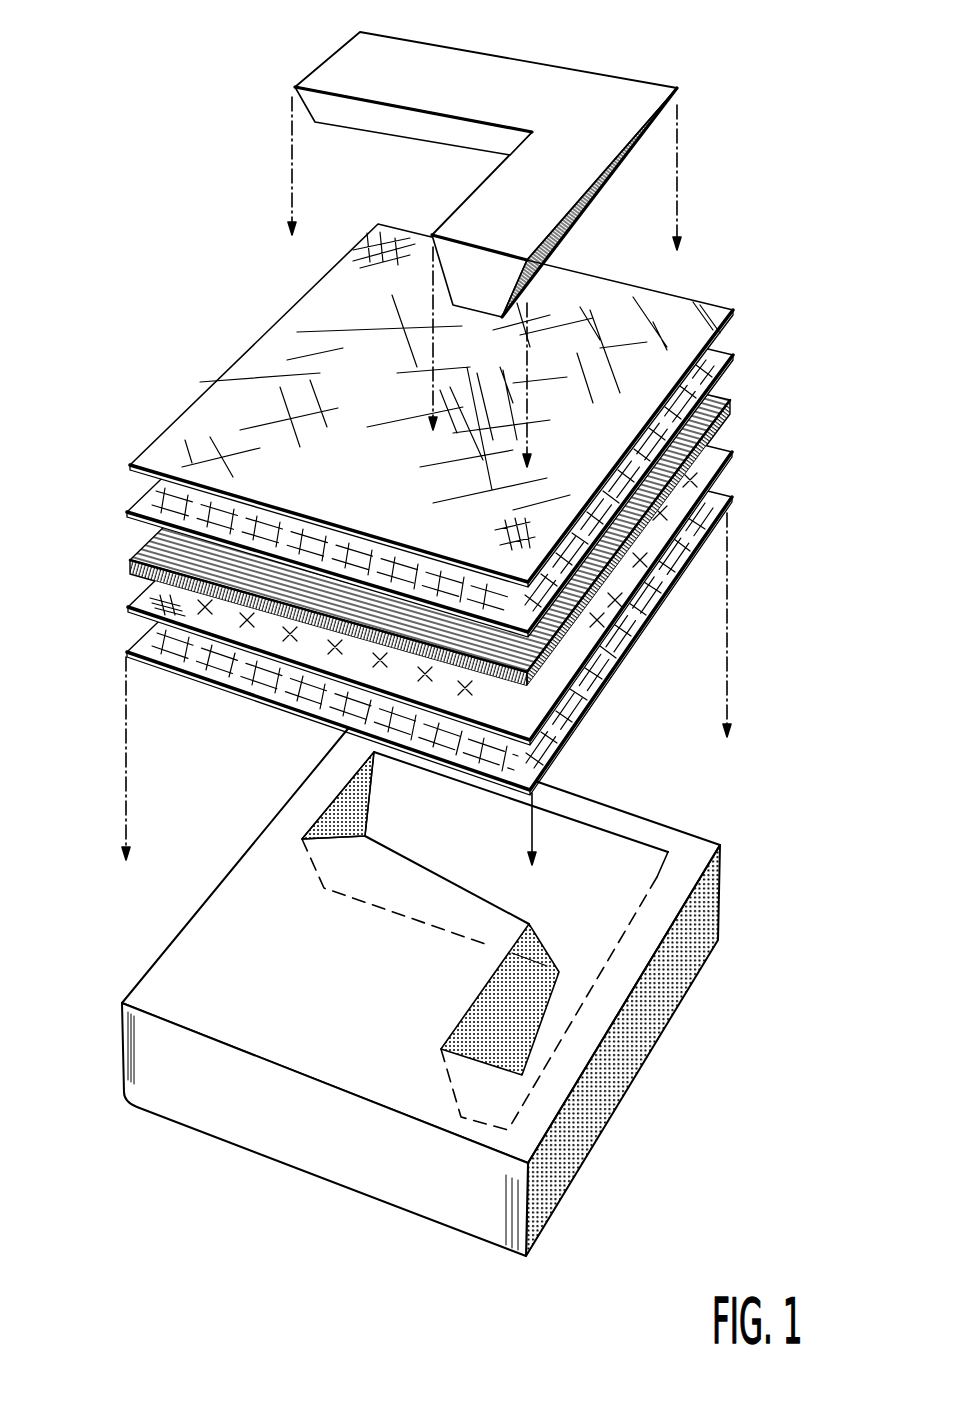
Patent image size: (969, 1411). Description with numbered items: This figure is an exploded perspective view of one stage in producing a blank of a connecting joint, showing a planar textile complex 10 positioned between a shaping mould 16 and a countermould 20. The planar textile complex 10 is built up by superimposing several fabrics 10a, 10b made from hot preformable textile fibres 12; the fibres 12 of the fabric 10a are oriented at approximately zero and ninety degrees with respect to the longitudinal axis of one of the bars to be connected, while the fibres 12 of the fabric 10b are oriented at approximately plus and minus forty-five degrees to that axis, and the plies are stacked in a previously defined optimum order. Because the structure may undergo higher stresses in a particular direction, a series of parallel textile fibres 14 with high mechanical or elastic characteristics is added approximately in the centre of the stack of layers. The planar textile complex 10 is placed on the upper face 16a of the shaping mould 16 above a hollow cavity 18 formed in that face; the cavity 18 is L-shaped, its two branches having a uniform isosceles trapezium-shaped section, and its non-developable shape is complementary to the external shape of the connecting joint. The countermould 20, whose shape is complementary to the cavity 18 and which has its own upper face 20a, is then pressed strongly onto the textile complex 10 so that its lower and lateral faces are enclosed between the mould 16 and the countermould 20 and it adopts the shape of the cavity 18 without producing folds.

The planar textile complex 10 is at (441, 487).
The fabric 10a is at (710, 383).
The fabric 10b is at (729, 322).
The textile fibres 12 is at (441, 509).
The parallel textile fibres 14 is at (177, 537).
The shaping mould 16 is at (432, 987).
The upper face of the mould 16a is at (197, 980).
The hollow cavity 18 is at (592, 933).
The countermould 20 is at (513, 160).
The upper face of the countermould 20a is at (388, 53).